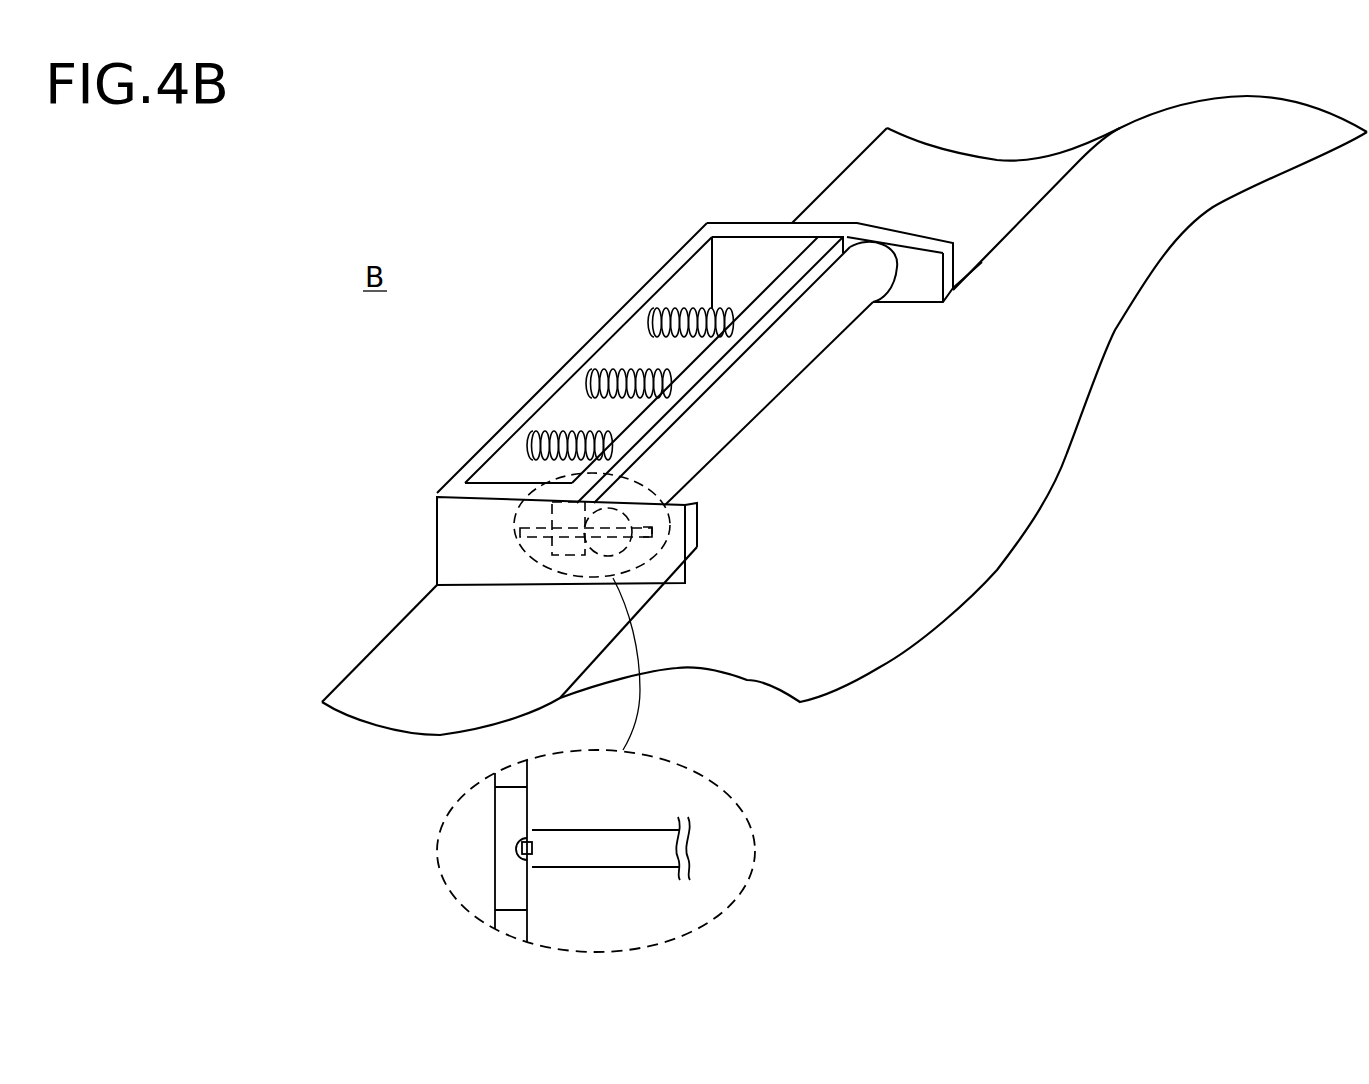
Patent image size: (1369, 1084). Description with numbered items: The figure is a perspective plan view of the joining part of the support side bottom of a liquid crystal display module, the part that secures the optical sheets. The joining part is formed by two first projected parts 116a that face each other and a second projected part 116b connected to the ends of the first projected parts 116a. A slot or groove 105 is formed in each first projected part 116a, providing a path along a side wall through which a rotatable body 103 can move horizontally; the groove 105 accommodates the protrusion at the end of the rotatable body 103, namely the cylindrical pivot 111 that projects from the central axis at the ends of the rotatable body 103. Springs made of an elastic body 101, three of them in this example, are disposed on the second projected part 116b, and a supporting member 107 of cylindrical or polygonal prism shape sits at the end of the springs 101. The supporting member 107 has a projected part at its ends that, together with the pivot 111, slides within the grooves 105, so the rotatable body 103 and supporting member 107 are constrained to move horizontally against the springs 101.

The elastic body 101 is at (651, 308).
The rotatable body 103 is at (768, 377).
The groove 105 is at (652, 530).
The supporting member 107 is at (790, 275).
The pivot 111 is at (530, 840).
The first projected part 116a is at (730, 228).
The second projected part 116b is at (578, 362).